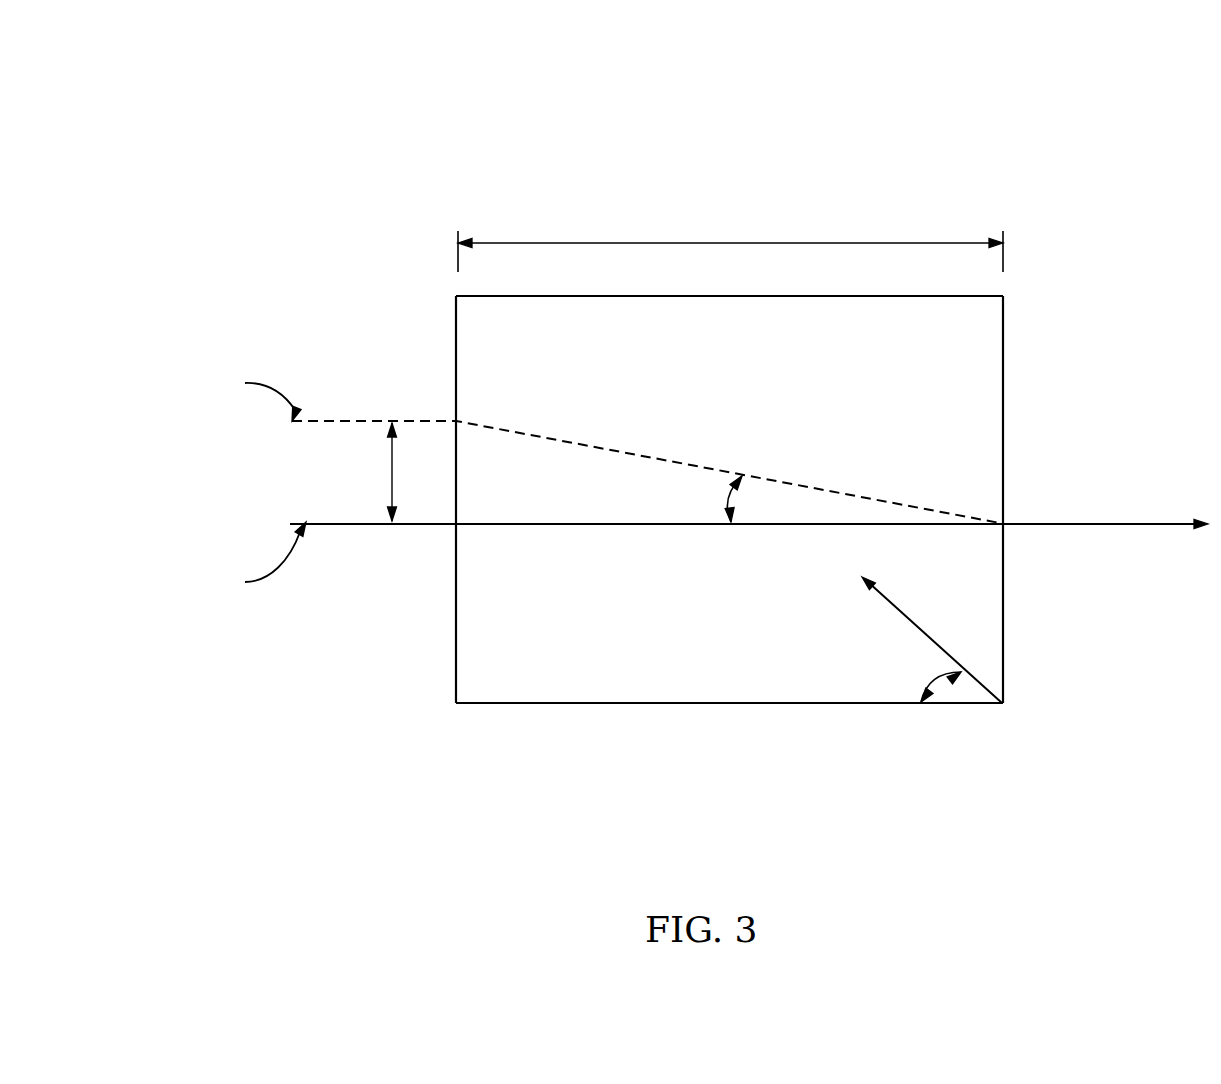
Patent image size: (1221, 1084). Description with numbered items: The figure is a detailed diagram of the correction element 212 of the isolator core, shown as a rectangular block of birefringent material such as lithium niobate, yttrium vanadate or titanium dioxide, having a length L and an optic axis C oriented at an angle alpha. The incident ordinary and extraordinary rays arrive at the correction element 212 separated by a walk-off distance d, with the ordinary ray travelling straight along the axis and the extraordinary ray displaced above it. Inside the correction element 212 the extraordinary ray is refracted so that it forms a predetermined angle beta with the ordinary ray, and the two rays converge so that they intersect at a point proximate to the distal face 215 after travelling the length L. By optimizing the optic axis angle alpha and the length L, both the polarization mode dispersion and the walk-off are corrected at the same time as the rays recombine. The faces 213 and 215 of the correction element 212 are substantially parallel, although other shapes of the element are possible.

The correction element 212 is at (228, 89).
The face 213 is at (455, 680).
The distal face 215 is at (1006, 648).